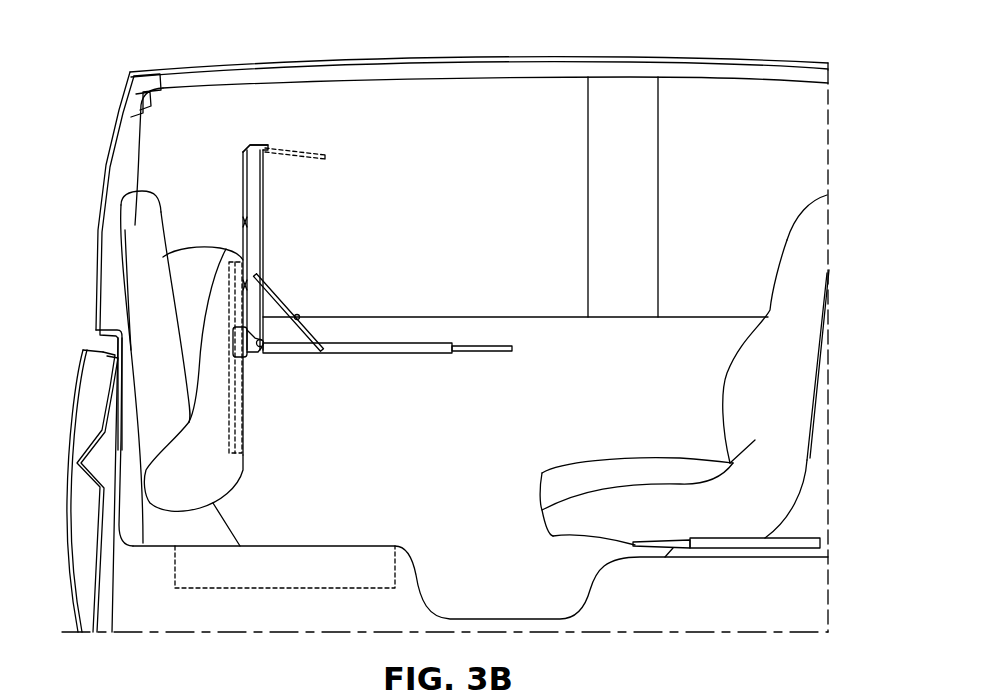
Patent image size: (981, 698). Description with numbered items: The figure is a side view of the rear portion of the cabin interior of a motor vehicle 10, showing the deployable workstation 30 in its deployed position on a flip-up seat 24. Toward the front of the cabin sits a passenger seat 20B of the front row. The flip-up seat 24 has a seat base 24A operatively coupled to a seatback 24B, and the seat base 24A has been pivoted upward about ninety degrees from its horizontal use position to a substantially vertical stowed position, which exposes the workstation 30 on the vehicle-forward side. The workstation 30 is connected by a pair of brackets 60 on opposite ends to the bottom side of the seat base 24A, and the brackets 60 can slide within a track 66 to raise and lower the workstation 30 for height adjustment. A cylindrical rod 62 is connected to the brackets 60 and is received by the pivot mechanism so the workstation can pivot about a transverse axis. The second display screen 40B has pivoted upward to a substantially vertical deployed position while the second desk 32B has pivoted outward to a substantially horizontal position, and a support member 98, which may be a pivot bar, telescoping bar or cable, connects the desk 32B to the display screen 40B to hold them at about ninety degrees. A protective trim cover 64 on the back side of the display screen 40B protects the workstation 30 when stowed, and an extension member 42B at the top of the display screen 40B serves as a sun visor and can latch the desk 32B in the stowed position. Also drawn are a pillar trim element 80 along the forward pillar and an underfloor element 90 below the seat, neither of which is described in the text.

The vehicle 10 is at (777, 53).
The pillar trim 80 is at (116, 130).
The front seat 24 is at (127, 195).
The seat cushion 24A is at (183, 253).
The seat back 24B is at (138, 243).
The partition panel 40B is at (263, 223).
The upper mount 64 is at (243, 155).
The upper support 42B is at (320, 148).
The passenger cabin 30 is at (392, 238).
The support link 98 is at (285, 290).
The tray table 32B is at (437, 340).
The pivot 62 is at (265, 346).
The hinge bracket 60 is at (248, 352).
The lower mount 66 is at (247, 435).
The rear seat 20B is at (770, 373).
The battery pack 90 is at (183, 588).